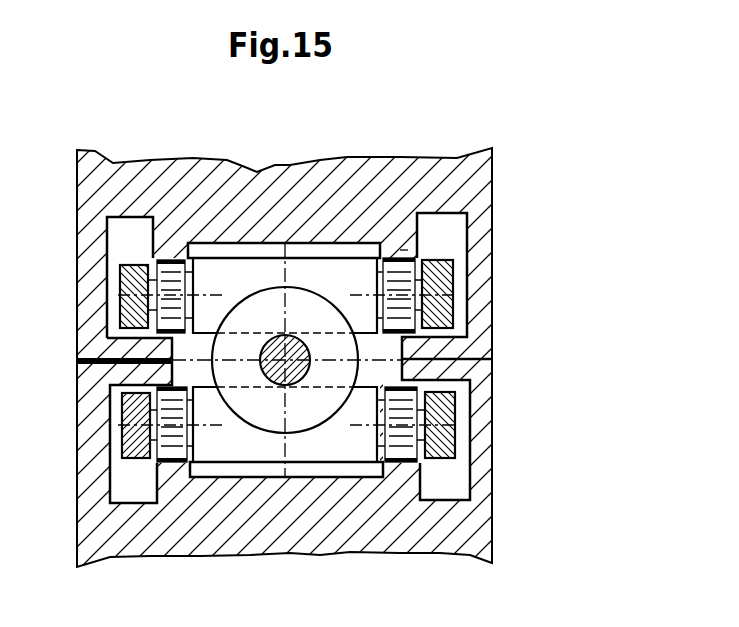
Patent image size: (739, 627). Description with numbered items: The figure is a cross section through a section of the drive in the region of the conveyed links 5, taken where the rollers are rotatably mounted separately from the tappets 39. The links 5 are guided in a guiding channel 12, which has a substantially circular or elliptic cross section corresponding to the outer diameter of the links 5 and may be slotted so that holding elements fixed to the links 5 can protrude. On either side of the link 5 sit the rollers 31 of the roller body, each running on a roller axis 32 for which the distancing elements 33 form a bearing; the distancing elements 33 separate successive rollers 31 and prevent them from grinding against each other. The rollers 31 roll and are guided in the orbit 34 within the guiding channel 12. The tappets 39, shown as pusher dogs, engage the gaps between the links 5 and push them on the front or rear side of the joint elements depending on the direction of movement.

The guiding channel 12 is at (476, 187).
The link 5 is at (262, 308).
The tappet 39 is at (305, 272).
The roller 31 is at (390, 243).
The roller axis 32 is at (445, 300).
The distancing element 33 is at (415, 272).
The orbit 34 is at (405, 245).